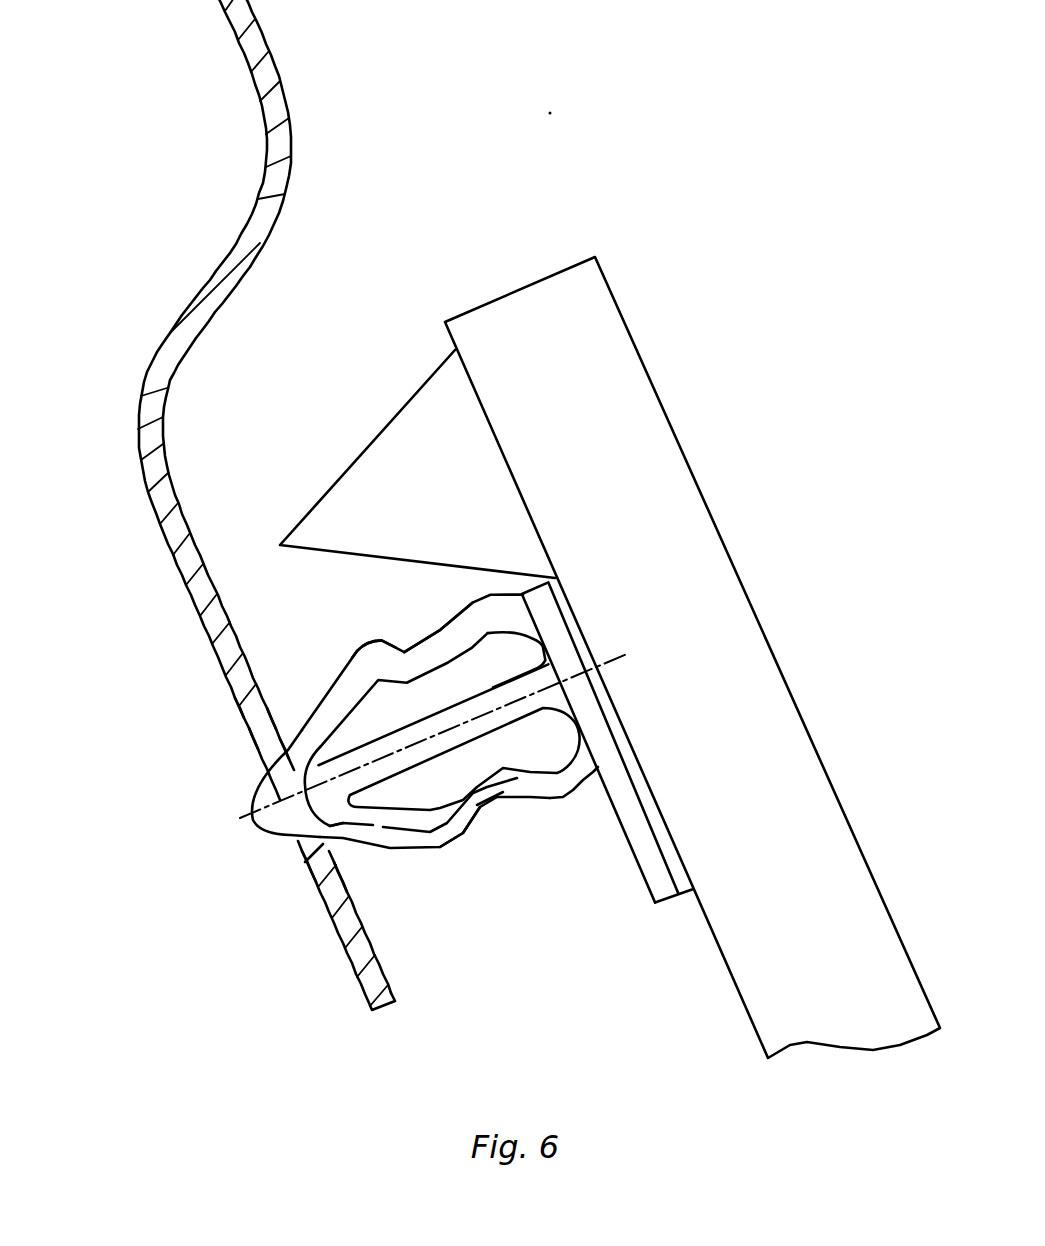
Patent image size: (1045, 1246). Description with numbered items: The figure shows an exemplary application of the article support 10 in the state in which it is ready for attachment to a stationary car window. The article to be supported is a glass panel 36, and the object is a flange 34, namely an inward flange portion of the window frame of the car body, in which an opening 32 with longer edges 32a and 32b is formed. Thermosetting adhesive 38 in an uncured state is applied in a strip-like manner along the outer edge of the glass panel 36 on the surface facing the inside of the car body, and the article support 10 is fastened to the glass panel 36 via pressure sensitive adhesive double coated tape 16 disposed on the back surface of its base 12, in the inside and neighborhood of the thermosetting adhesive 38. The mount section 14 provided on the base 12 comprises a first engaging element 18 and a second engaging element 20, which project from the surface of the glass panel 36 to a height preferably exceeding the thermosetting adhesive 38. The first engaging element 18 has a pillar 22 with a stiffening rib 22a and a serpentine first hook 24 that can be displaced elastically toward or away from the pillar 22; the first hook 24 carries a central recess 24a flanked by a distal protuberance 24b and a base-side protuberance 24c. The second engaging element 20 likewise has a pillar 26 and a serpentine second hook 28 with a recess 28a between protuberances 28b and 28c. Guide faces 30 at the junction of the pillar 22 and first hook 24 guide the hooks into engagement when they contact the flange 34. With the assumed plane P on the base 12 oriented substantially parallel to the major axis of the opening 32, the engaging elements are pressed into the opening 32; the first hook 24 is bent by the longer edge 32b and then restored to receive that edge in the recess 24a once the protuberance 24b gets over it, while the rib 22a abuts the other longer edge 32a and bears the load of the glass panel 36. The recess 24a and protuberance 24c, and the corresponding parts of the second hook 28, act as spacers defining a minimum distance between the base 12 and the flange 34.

The article support 10 is at (494, 684).
The base 12 is at (651, 920).
The mount section 14 is at (494, 632).
The pressure sensitive adhesive double coated tape 16 is at (688, 900).
The first engaging element 18 is at (226, 811).
The second engaging element 20 is at (292, 824).
The pillar 22 is at (482, 841).
The rib 22a is at (483, 812).
The first hook 24 is at (543, 578).
The recess 24a is at (420, 652).
The protuberance 24b is at (367, 644).
The protuberance 24c is at (473, 603).
The pillar 26 is at (548, 665).
The second hook 28 is at (416, 828).
The recess 28a is at (508, 800).
The protuberance 28b is at (452, 840).
The protuberance 28c is at (587, 810).
The guide faces 30 is at (320, 868).
The opening 32 is at (257, 736).
The longer edge 32a is at (320, 868).
The longer edge 32b is at (240, 712).
The flange 34 is at (138, 465).
The glass panel 36 is at (645, 343).
The thermosetting adhesive 38 is at (385, 455).
The assumed plane P is at (240, 818).